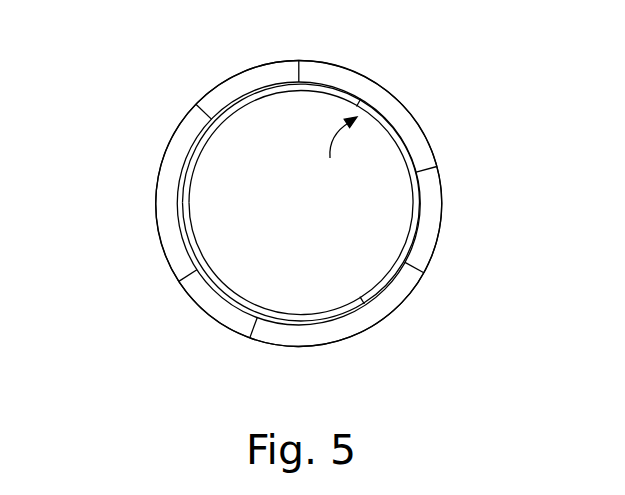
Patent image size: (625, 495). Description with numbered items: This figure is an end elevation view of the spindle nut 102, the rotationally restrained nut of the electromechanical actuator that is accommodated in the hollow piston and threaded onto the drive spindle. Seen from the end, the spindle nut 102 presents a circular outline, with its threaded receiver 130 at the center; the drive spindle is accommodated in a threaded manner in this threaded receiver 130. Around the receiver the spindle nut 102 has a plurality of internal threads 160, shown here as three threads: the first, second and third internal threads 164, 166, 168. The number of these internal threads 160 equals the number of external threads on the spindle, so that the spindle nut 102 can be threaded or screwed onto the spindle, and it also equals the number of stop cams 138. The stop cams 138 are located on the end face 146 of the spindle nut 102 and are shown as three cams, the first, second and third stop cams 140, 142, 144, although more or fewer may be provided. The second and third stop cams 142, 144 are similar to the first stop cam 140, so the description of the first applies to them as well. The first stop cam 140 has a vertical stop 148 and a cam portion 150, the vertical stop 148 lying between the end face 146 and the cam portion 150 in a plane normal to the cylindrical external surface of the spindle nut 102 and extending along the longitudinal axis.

The spindle nut 102 is at (409, 82).
The threaded receiver 130 is at (322, 213).
The stop cams 138 is at (229, 74).
The first stop cam 140 is at (161, 282).
The second stop cam 142 is at (438, 280).
The third stop cam 144 is at (305, 46).
The end face 146 is at (218, 332).
The vertical stop 148 is at (196, 282).
The cam portion 150 is at (165, 232).
The internal threads 160 is at (362, 153).
The first internal thread 164 is at (212, 268).
The second internal thread 166 is at (408, 233).
The third internal thread 168 is at (286, 88).